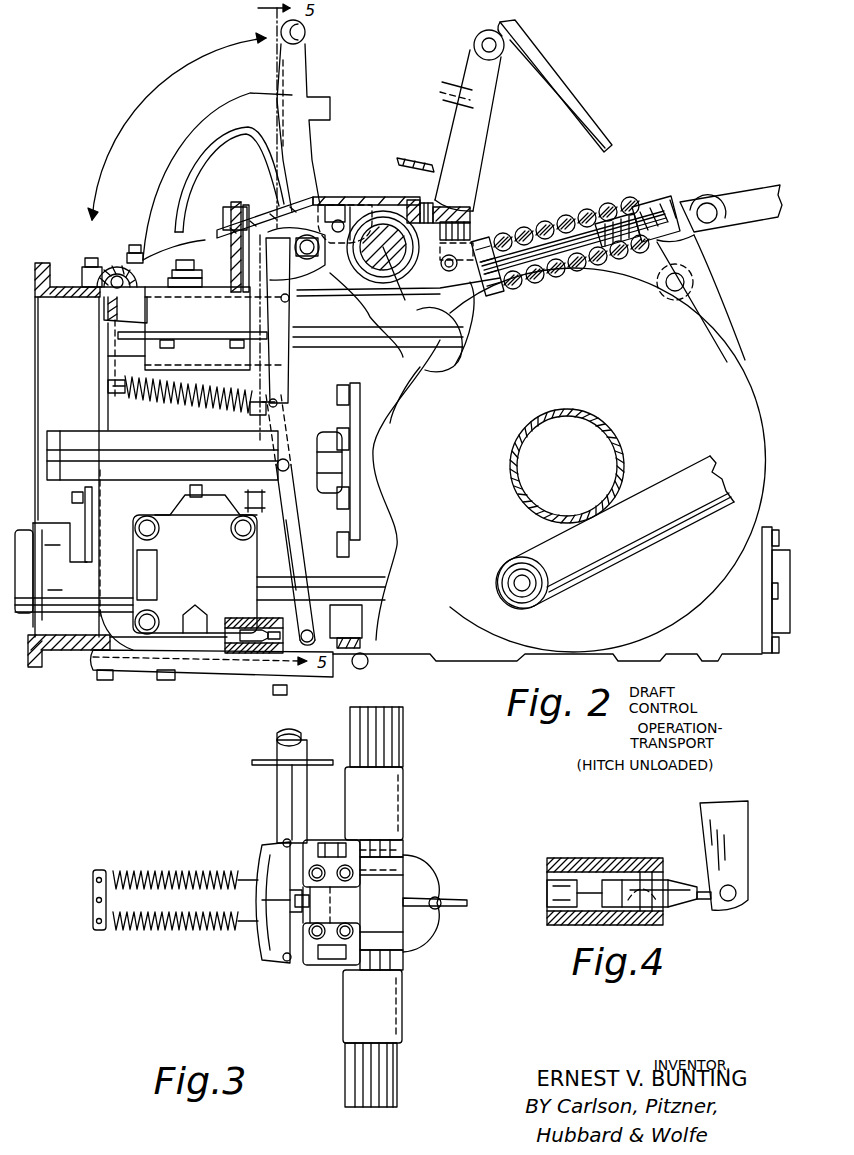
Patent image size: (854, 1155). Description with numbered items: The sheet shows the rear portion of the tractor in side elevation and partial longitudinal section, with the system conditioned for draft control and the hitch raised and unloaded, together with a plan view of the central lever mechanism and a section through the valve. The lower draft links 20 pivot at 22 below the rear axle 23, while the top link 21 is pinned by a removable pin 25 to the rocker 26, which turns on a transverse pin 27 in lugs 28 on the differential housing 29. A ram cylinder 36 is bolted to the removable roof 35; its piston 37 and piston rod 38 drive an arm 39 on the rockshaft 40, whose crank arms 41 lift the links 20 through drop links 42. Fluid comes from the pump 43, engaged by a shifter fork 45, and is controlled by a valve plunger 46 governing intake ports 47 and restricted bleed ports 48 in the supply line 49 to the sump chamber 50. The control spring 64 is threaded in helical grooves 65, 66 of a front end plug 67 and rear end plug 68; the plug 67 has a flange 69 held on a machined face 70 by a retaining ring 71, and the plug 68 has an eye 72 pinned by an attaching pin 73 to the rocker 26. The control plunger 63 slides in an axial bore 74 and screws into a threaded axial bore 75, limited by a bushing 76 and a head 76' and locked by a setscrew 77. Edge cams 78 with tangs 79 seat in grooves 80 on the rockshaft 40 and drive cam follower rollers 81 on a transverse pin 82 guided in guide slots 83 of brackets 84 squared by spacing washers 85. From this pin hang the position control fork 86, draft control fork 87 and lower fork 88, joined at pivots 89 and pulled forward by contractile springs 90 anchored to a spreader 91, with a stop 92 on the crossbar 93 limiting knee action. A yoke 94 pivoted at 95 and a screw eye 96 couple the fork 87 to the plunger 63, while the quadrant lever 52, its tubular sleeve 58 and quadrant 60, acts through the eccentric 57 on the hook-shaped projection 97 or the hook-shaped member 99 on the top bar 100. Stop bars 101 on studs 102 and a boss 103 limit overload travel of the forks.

In FIG. 2, the lower draft links 20 is at (688, 522).
In FIG. 2, the top link 21 is at (758, 195).
In FIG. 2, the pivots of lower draft links 22 is at (506, 567).
In FIG. 2, the rear axle 23 is at (620, 428).
In FIG. 2, the removable pin 25 is at (712, 210).
In FIG. 2, the rocker 26 is at (708, 200).
In FIG. 2, the transverse pin 27 is at (684, 283).
In FIG. 2, the lugs 28 is at (705, 312).
In FIG. 2, the differential housing 29 is at (720, 400).
In FIG. 2, the removable roof 35 is at (83, 275).
In FIG. 2, the cylinder 36 is at (130, 356).
In FIG. 2, the piston 37 is at (310, 303).
In FIG. 2, the piston rod 38 is at (372, 340).
In FIG. 2, the arm 39 is at (423, 330).
In FIG. 2, the rockshaft 40 is at (383, 218).
In FIG. 3, the rockshaft 40 is at (380, 1068).
In FIG. 2, the crank arms 41 is at (442, 110).
In FIG. 2, the drop links 42 is at (560, 110).
In FIG. 2, the positive displacement pump 43 is at (183, 570).
In FIG. 4, the positive displacement pump 43 is at (590, 860).
In FIG. 2, the shifter fork 45 is at (372, 575).
In FIG. 2, the valve plunger 46 is at (255, 668).
In FIG. 4, the valve plunger 46 is at (668, 903).
In FIG. 2, the intake ports 47 is at (262, 672).
In FIG. 4, the intake ports 47 is at (655, 890).
In FIG. 2, the bleed ports 48 is at (225, 615).
In FIG. 4, the bleed ports 48 is at (600, 892).
In FIG. 2, the supply line 49 is at (103, 622).
In FIG. 2, the sump chamber 50 is at (352, 642).
In FIG. 2, the quadrant lever 52 is at (306, 33).
In FIG. 2, the eccentric 57 is at (296, 240).
In FIG. 3, the eccentric 57 is at (300, 905).
In FIG. 3, the tubular sleeve 58 is at (285, 786).
In FIG. 2, the quadrant 60 is at (222, 122).
In FIG. 2, the control plunger 63 is at (540, 235).
In FIG. 2, the control spring 64 is at (515, 245).
In FIG. 2, the helical groove 65 is at (510, 240).
In FIG. 2, the helical groove 66 is at (626, 205).
In FIG. 2, the front end plug 67 is at (493, 235).
In FIG. 2, the rear end plug 68 is at (650, 200).
In FIG. 2, the flange 69 is at (446, 258).
In FIG. 2, the machined face 70 is at (487, 285).
In FIG. 2, the retaining ring 71 is at (497, 280).
In FIG. 2, the eye 72 is at (668, 210).
In FIG. 2, the attaching pin 73 is at (690, 238).
In FIG. 2, the axial bore 74 is at (537, 290).
In FIG. 2, the threaded axial bore 75 is at (606, 255).
In FIG. 2, the bushing 76 is at (571, 292).
In FIG. 2, the head 76' is at (476, 192).
In FIG. 2, the setscrew 77 is at (678, 244).
In FIG. 2, the edge cams 78 is at (390, 212).
In FIG. 3, the edge cams 78 is at (368, 840).
In FIG. 2, the tangs 79 is at (377, 262).
In FIG. 2, the grooves 80 is at (396, 200).
In FIG. 3, the grooves 80 is at (403, 849).
In FIG. 2, the cam follower rollers 81 is at (338, 208).
In FIG. 3, the cam follower rollers 81 is at (335, 843).
In FIG. 2, the transverse pin 82 is at (340, 218).
In FIG. 3, the transverse pin 82 is at (320, 963).
In FIG. 2, the guide slots 83 is at (352, 212).
In FIG. 2, the brackets 84 is at (300, 205).
In FIG. 3, the brackets 84 is at (303, 866).
In FIG. 2, the spacing washers 85 is at (320, 208).
In FIG. 3, the spacing washers 85 is at (410, 870).
In FIG. 2, the position control fork 86 is at (282, 355).
In FIG. 2, the draft control fork 87 is at (275, 372).
In FIG. 3, the draft control fork 87 is at (260, 866).
In FIG. 2, the lower fork 88 is at (298, 535).
In FIG. 4, the lower fork 88 is at (735, 828).
In FIG. 2, the pivots 89 is at (277, 462).
In FIG. 2, the contractile springs 90 is at (170, 398).
In FIG. 3, the contractile springs 90 is at (150, 921).
In FIG. 2, the spreader 91 is at (116, 385).
In FIG. 3, the spreader 91 is at (93, 900).
In FIG. 2, the stop 92 is at (256, 412).
In FIG. 2, the crossbar 93 is at (280, 404).
In FIG. 2, the yoke 94 is at (445, 307).
In FIG. 3, the yoke 94 is at (420, 935).
In FIG. 2, the pivot 95 is at (283, 297).
In FIG. 3, the pivot 95 is at (283, 840).
In FIG. 3, the screw eye 96 is at (437, 900).
In FIG. 2, the hook-shaped projection 97 is at (275, 240).
In FIG. 3, the hook-shaped projection 97 is at (270, 902).
In FIG. 2, the hook-shaped member 99 is at (220, 232).
In FIG. 3, the top bar 100 is at (348, 880).
In FIG. 2, the stop bars 101 is at (118, 335).
In FIG. 2, the studs 102 is at (227, 318).
In FIG. 2, the boss 103 is at (323, 630).